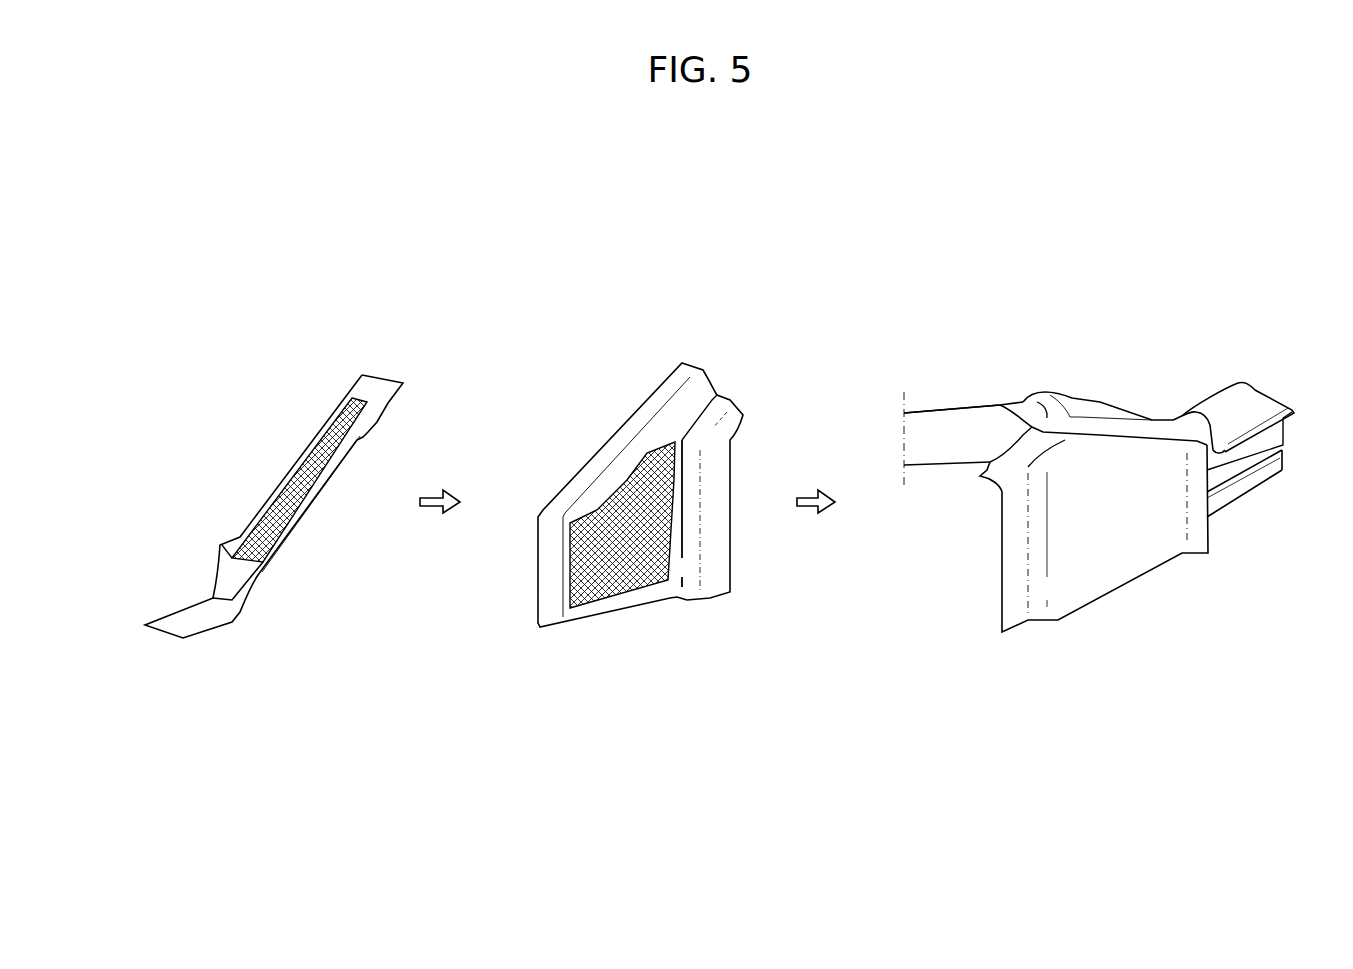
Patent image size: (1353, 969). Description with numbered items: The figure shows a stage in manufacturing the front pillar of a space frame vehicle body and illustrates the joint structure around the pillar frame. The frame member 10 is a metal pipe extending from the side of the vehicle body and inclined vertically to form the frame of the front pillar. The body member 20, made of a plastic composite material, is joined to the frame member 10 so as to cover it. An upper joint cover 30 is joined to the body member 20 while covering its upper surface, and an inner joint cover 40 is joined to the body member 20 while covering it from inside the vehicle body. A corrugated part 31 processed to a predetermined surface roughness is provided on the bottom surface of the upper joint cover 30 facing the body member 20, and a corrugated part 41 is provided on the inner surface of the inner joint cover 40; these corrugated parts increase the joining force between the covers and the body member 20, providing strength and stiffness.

The frame member 10 is at (958, 422).
The body member 20 is at (1248, 470).
The upper joint cover 30 is at (370, 388).
The corrugated part 31 is at (310, 458).
The inner joint cover 40 is at (648, 406).
The corrugated part 41 is at (622, 587).